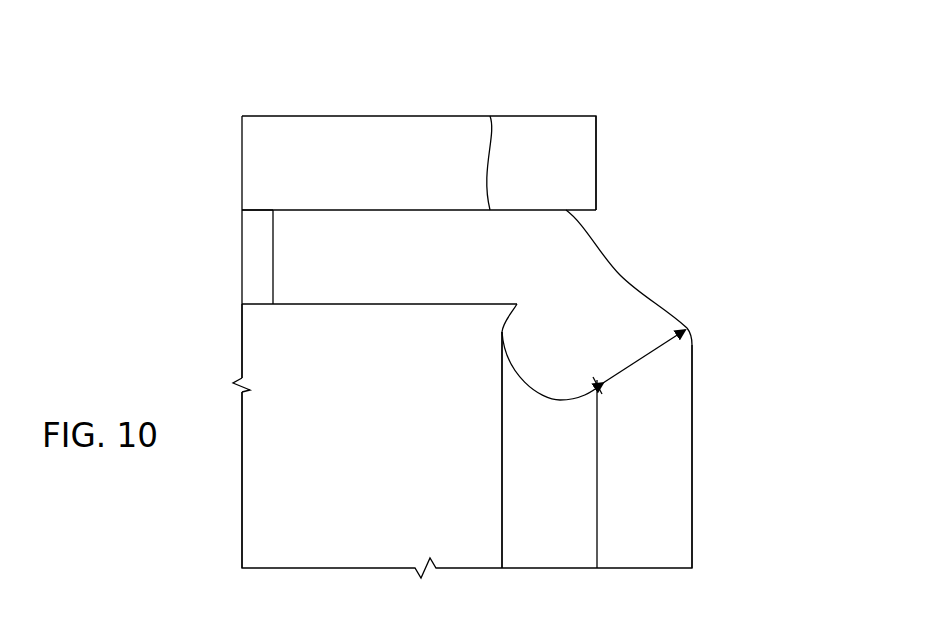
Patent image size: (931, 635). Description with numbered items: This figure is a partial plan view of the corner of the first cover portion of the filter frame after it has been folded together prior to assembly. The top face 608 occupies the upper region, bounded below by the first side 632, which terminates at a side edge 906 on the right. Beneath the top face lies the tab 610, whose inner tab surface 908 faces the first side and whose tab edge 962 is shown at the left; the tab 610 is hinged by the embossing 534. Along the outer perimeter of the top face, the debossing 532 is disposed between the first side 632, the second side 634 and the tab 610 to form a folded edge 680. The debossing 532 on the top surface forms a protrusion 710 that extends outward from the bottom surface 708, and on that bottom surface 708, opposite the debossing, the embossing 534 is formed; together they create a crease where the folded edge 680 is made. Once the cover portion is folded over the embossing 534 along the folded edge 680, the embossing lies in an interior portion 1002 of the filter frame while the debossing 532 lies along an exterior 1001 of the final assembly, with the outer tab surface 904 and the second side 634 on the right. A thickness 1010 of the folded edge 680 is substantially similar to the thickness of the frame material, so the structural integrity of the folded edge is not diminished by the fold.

The exterior 1001 is at (366, 108).
The top face 608 is at (300, 116).
The side edge 906 is at (575, 132).
The first side 632 is at (380, 167).
The inner tab surface 908 is at (308, 232).
The tab edge 962 is at (272, 232).
The tab 610 is at (380, 267).
The protrusion 710 is at (252, 288).
The bottom surface 708 is at (310, 305).
The debossing 532 is at (617, 272).
The folded edge 680 is at (657, 303).
The embossing 534 is at (513, 343).
The thickness 1010 is at (645, 352).
The interior portion 1002 is at (355, 420).
The second side 634 is at (626, 467).
The outer tab surface 904 is at (667, 408).